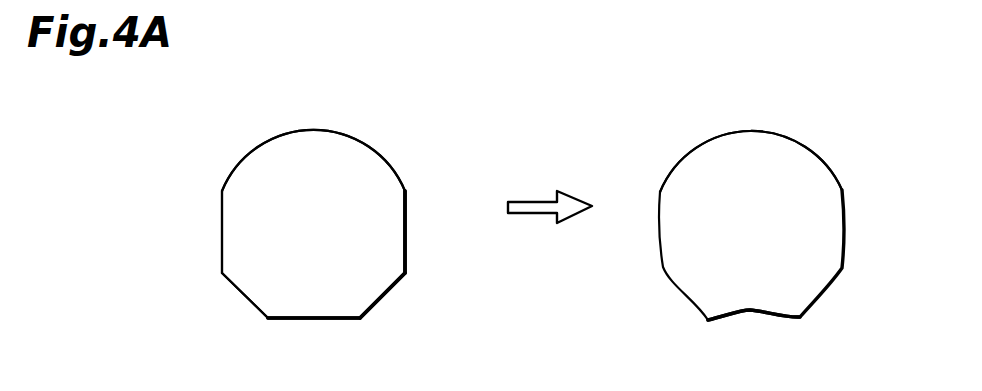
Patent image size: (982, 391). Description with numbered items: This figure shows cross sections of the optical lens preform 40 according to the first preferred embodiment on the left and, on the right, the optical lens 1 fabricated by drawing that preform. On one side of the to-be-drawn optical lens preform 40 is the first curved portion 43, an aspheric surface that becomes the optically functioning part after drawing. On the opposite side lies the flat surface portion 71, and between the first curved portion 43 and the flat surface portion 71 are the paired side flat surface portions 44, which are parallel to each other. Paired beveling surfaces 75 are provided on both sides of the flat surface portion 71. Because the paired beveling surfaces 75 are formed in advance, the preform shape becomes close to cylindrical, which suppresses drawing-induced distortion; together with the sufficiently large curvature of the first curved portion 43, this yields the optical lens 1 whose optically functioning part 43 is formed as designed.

The optical lens preform 40 is at (395, 117).
The optical lens 1 is at (830, 117).
The first curved portion 43 is at (323, 130).
The paired side flat surface portions 44 is at (222, 205).
The paired beveling surfaces 75 is at (242, 297).
The flat surface portion 71 is at (325, 320).